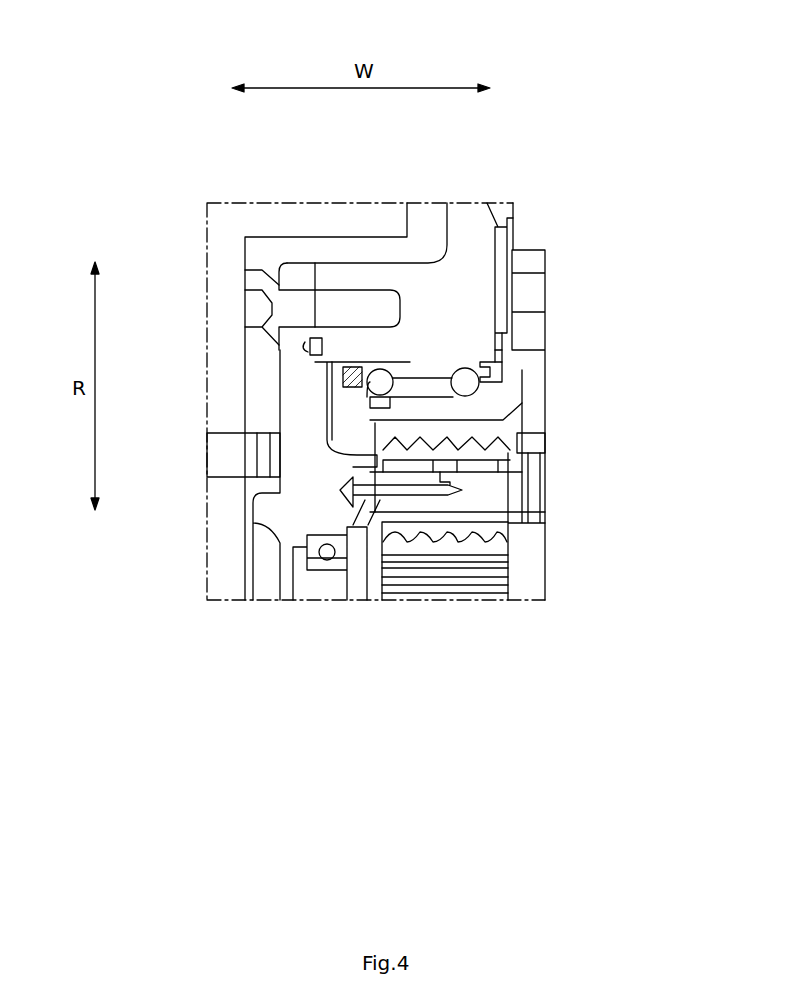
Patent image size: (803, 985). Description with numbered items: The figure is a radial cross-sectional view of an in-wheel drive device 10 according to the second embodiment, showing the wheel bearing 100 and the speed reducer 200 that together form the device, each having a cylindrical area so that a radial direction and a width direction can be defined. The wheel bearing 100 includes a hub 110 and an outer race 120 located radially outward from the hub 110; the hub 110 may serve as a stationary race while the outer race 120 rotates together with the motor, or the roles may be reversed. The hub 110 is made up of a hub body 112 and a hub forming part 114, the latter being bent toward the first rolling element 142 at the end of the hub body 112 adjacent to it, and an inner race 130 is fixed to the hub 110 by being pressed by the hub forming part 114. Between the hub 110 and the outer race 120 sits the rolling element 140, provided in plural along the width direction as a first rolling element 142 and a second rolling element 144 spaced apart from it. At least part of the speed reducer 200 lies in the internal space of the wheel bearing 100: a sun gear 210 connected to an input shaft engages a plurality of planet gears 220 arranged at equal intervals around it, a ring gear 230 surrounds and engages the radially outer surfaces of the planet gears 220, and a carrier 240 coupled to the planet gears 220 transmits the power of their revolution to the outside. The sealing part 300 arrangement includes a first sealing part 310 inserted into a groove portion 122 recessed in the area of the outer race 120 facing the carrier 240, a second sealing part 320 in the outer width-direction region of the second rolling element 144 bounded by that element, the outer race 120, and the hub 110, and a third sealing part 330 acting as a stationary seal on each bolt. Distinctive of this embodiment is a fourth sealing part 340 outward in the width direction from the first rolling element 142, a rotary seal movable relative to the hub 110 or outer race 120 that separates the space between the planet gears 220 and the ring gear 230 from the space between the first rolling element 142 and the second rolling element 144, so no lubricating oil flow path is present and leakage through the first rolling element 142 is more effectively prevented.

The in-wheel drive device 10 is at (132, 28).
The wheel bearing 100 is at (258, 762).
The hub 110 is at (545, 325).
The hub body 112 is at (487, 402).
The hub forming part 114 is at (340, 395).
The outer race 120 is at (350, 350).
The groove portion 122 is at (345, 347).
The inner race 130 is at (345, 412).
The rolling element 140 is at (110, 779).
The first rolling element 142 is at (372, 377).
The second rolling element 144 is at (463, 378).
The speed reducer 200 is at (413, 762).
The sun gear 210 is at (497, 550).
The planet gear 220 is at (505, 455).
The ring gear 230 is at (517, 423).
The carrier 240 is at (290, 515).
The sealing part 300 is at (565, 762).
The first sealing part 310 is at (310, 341).
The second sealing part 320 is at (485, 368).
The third sealing part 330 is at (589, 823).
The fourth sealing part 340 is at (345, 372).